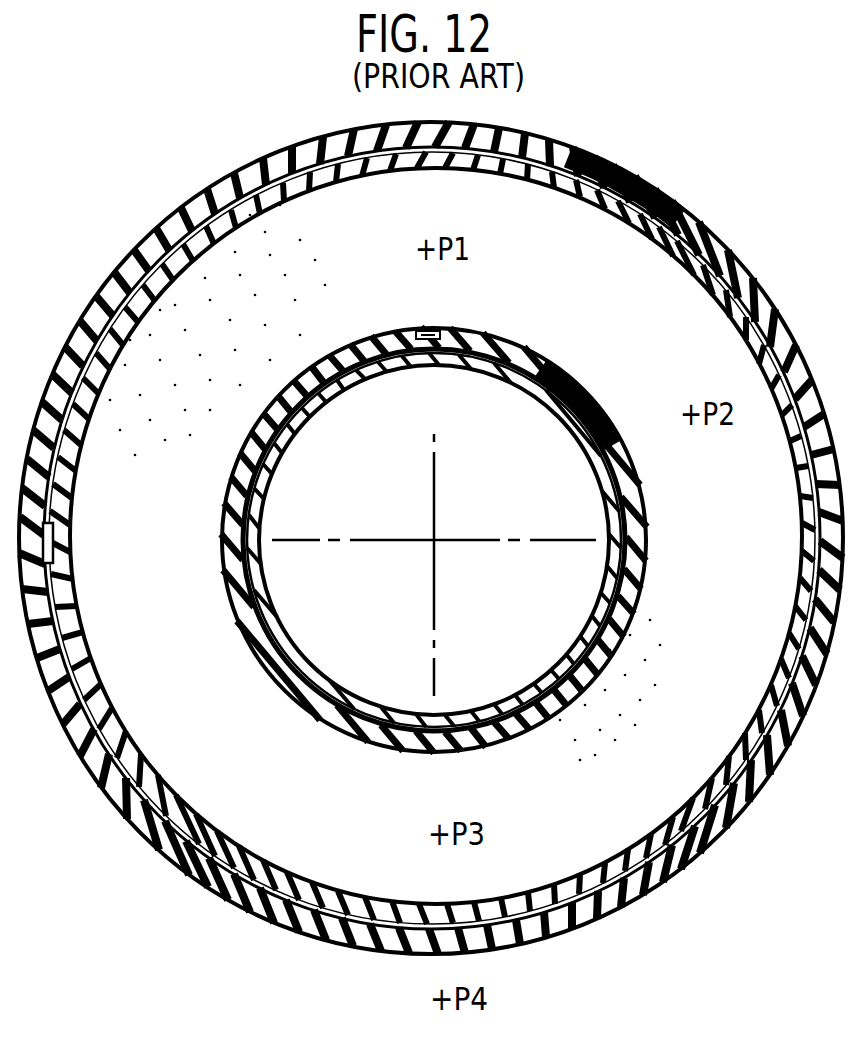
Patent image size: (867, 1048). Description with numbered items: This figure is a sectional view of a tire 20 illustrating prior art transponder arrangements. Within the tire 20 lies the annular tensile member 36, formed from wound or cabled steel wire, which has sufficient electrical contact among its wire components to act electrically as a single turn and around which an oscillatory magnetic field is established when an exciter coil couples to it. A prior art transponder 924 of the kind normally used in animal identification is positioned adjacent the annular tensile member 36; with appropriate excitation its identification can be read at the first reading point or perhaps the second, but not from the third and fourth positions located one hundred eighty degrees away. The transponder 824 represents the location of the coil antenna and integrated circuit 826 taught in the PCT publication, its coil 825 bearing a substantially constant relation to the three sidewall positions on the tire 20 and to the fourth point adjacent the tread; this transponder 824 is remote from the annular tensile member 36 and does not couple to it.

The tire 20 is at (535, 136).
The coil 825 is at (581, 158).
The transponder 824 is at (661, 209).
The integrated circuit 826 is at (53, 543).
The annular tensile member 36 is at (548, 405).
The transponder 924 is at (418, 358).